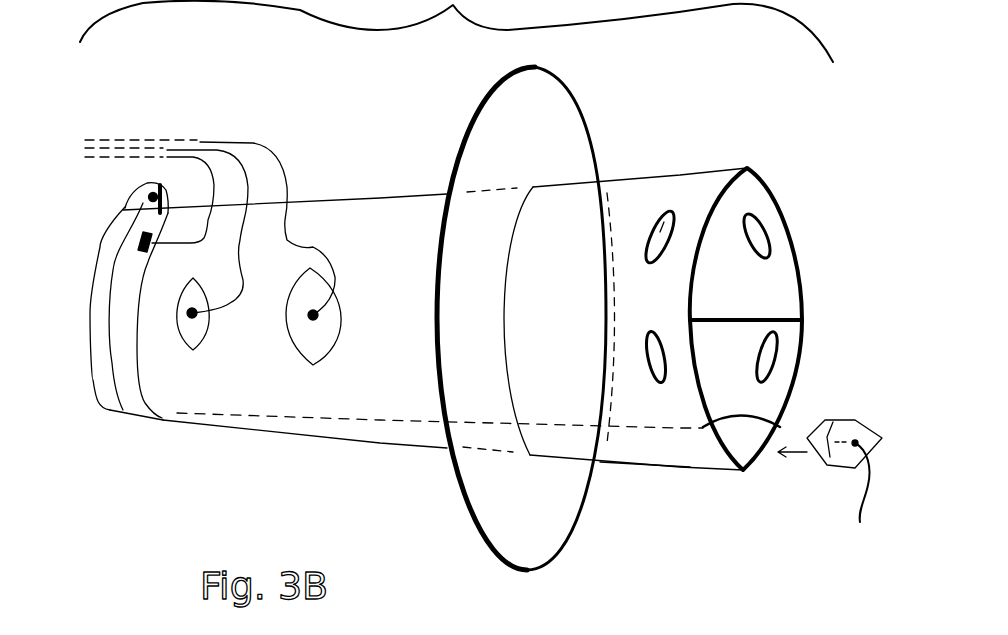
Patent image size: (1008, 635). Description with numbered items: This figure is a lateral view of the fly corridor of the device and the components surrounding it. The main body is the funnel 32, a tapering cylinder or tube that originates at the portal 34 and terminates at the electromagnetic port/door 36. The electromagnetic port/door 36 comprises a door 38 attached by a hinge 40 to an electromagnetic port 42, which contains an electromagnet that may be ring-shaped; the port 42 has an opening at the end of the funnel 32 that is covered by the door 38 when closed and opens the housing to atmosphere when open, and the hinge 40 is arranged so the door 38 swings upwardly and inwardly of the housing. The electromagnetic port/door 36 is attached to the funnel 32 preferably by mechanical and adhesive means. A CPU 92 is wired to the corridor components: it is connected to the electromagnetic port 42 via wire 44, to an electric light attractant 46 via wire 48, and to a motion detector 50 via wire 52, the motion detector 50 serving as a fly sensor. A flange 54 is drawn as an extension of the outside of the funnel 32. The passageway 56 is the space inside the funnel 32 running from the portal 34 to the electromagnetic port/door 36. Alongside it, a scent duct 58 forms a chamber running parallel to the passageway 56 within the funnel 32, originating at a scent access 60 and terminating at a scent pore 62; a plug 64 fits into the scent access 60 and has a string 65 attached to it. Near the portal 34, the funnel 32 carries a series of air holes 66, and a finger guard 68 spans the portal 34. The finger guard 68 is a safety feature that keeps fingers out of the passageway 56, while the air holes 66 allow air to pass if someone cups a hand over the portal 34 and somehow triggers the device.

The funnel 32 is at (403, 193).
The portal 34 is at (775, 217).
The electromagnetic port/door 36 is at (173, 73).
The door 38 is at (102, 297).
The hinge 40 is at (141, 198).
The electromagnetic port 42 is at (160, 185).
The wire 44 is at (177, 157).
The electric light attractant 46 is at (205, 316).
The wire 48 is at (212, 152).
The motion detector 50 is at (327, 333).
The wire 52 is at (247, 143).
The flange 54 is at (580, 153).
The passageway 56 is at (754, 293).
The scent duct 58 is at (645, 452).
The scent access 60 is at (725, 440).
The scent pore 62 is at (168, 420).
The plug 64 is at (827, 458).
The string 65 is at (868, 472).
The air holes 66 is at (671, 212).
The finger guard 68 is at (727, 318).
The CPU 92 is at (86, 166).